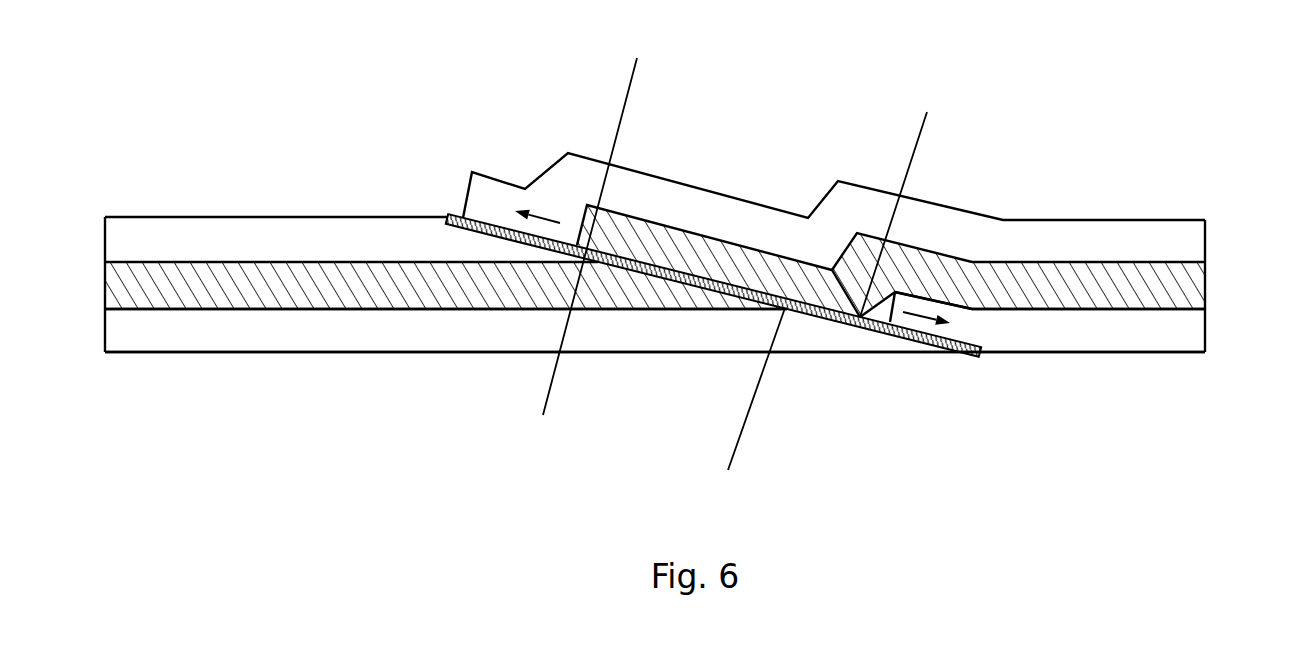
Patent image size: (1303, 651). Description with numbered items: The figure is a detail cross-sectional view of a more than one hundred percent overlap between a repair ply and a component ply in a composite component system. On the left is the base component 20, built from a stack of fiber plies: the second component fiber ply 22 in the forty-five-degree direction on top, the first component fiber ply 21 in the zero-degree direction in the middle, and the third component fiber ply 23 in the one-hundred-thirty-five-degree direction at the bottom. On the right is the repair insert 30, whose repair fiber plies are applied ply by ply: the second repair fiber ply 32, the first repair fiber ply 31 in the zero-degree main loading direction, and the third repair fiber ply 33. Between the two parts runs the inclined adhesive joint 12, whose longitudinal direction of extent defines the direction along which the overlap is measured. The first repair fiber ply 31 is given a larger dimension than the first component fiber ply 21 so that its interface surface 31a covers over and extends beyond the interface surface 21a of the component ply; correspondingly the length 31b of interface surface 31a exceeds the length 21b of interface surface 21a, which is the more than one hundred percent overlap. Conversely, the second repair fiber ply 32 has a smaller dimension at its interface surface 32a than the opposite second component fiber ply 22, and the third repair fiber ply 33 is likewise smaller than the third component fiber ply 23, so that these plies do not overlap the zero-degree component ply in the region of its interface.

The adhesive joint 12 is at (918, 360).
The base component 20 is at (246, 160).
The first component fiber ply 21 is at (155, 297).
The interface surface of the first component fiber ply 21a is at (637, 246).
The length of the interface surface of the first component fiber ply 21b is at (713, 459).
The second component fiber ply 22 is at (160, 232).
The third component fiber ply 23 is at (212, 338).
The repair insert 30 is at (1009, 150).
The first repair fiber ply 31 is at (1175, 283).
The interface surface of the first repair fiber ply 31a is at (807, 332).
The length of the interface surface of the first repair fiber ply 31b is at (898, 143).
The second repair fiber ply 32 is at (1143, 247).
The interface surface of the second repair fiber ply 32a is at (507, 254).
The third repair fiber ply 33 is at (1150, 337).